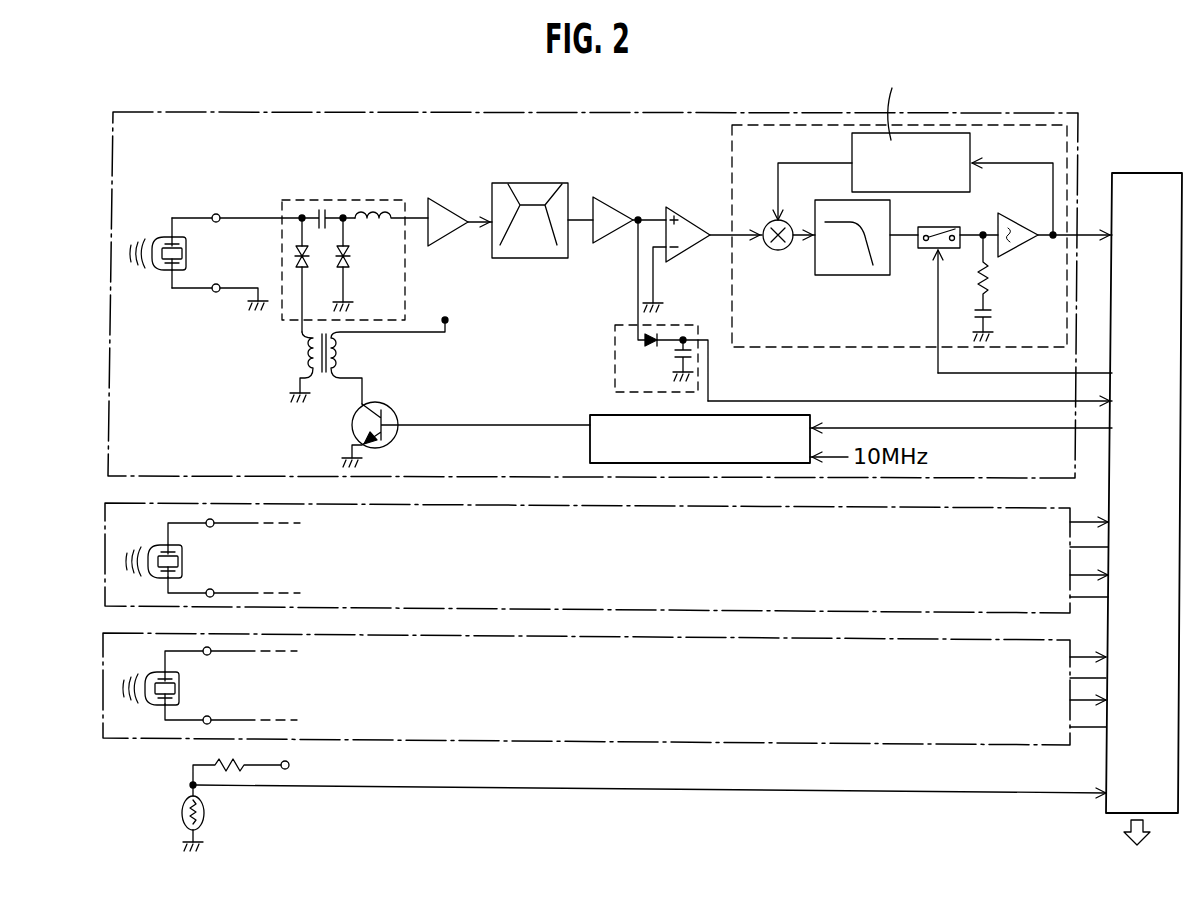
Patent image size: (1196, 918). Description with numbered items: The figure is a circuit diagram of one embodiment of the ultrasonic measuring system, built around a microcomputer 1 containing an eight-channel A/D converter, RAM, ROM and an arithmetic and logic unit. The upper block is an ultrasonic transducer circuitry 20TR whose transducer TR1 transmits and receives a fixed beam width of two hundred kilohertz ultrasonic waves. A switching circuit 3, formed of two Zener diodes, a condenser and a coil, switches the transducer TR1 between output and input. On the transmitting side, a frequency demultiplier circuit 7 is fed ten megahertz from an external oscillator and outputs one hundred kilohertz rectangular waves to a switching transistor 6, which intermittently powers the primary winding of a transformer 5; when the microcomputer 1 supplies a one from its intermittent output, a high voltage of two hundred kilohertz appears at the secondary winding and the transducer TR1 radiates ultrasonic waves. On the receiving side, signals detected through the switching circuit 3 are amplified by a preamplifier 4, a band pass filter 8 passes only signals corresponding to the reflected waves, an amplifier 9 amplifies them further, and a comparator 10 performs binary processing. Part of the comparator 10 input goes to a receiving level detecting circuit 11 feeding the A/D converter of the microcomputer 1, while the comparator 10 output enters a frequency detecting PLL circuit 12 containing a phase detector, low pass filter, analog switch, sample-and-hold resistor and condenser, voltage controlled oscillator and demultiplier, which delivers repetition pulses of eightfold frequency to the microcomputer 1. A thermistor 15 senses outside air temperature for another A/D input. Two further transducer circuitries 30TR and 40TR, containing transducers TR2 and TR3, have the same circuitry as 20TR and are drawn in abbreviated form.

The microcomputer 1 is at (1144, 172).
The switching circuit 3 is at (282, 200).
The preamplifier 4 is at (440, 198).
The transformer 5 is at (340, 355).
The switching transistor 6 is at (392, 408).
The frequency demultiplier circuit 7 is at (590, 450).
The band pass filter 8 is at (538, 258).
The amplifier 9 is at (612, 197).
The comparator 10 is at (686, 207).
The receiving level detecting circuit 11 is at (613, 375).
The frequency detecting PLL circuit 12 is at (785, 347).
The thermistor 15 is at (205, 815).
The ultrasonic transducer circuitry 20TR is at (490, 112).
The ultrasonic transducer circuitry 30TR is at (105, 568).
The ultrasonic transducer circuitry 40TR is at (155, 740).
The ultrasonic transducer TR1 is at (139, 208).
The ultrasonic transducer TR2 is at (187, 561).
The ultrasonic transducer TR3 is at (184, 690).